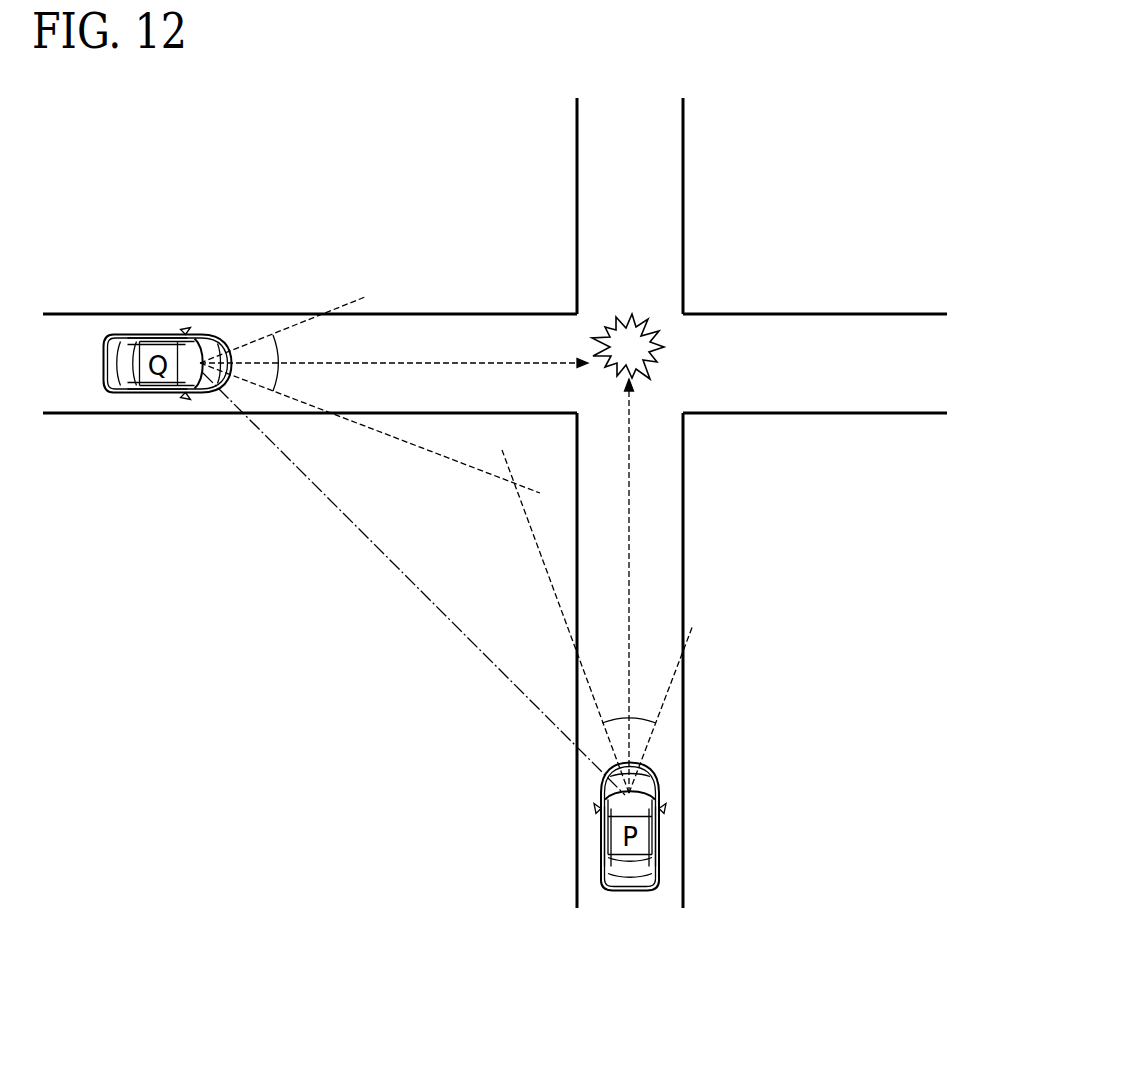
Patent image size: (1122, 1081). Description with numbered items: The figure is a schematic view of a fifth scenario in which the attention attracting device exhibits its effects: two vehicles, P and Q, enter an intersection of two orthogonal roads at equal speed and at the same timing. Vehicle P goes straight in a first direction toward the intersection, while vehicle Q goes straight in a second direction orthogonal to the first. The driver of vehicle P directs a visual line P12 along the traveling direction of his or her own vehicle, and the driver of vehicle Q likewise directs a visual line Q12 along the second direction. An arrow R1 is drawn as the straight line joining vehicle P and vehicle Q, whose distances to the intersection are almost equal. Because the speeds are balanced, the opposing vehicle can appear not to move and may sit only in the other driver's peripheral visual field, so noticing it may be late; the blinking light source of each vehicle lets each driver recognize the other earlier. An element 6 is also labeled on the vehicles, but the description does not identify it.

The sensor 6 is at (493, 515).
The visual line Q12 is at (428, 363).
The visual line P12 is at (630, 589).
The arrow R1 is at (402, 580).